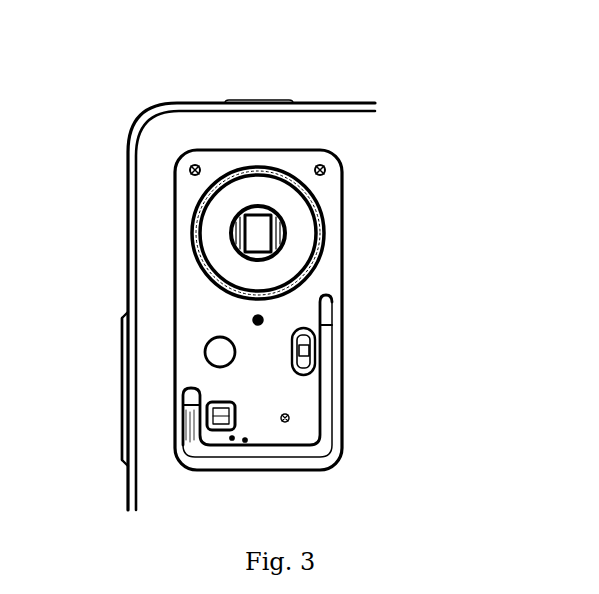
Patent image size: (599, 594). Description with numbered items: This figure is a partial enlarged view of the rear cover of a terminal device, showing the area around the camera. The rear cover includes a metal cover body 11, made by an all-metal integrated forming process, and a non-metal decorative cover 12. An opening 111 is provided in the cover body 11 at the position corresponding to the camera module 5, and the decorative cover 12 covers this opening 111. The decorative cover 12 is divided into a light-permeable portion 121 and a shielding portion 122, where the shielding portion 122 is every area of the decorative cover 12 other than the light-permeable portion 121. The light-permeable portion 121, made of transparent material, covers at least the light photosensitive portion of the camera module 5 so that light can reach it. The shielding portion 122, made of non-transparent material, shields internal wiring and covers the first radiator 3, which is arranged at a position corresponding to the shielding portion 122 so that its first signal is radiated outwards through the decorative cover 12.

The cover body 11 is at (342, 125).
The opening 111 is at (172, 200).
The decorative cover 12 is at (447, 196).
The light-permeable portion 121 is at (306, 238).
The shielding portion 122 is at (306, 307).
The first radiator 3 is at (328, 358).
The camera module 5 is at (232, 230).